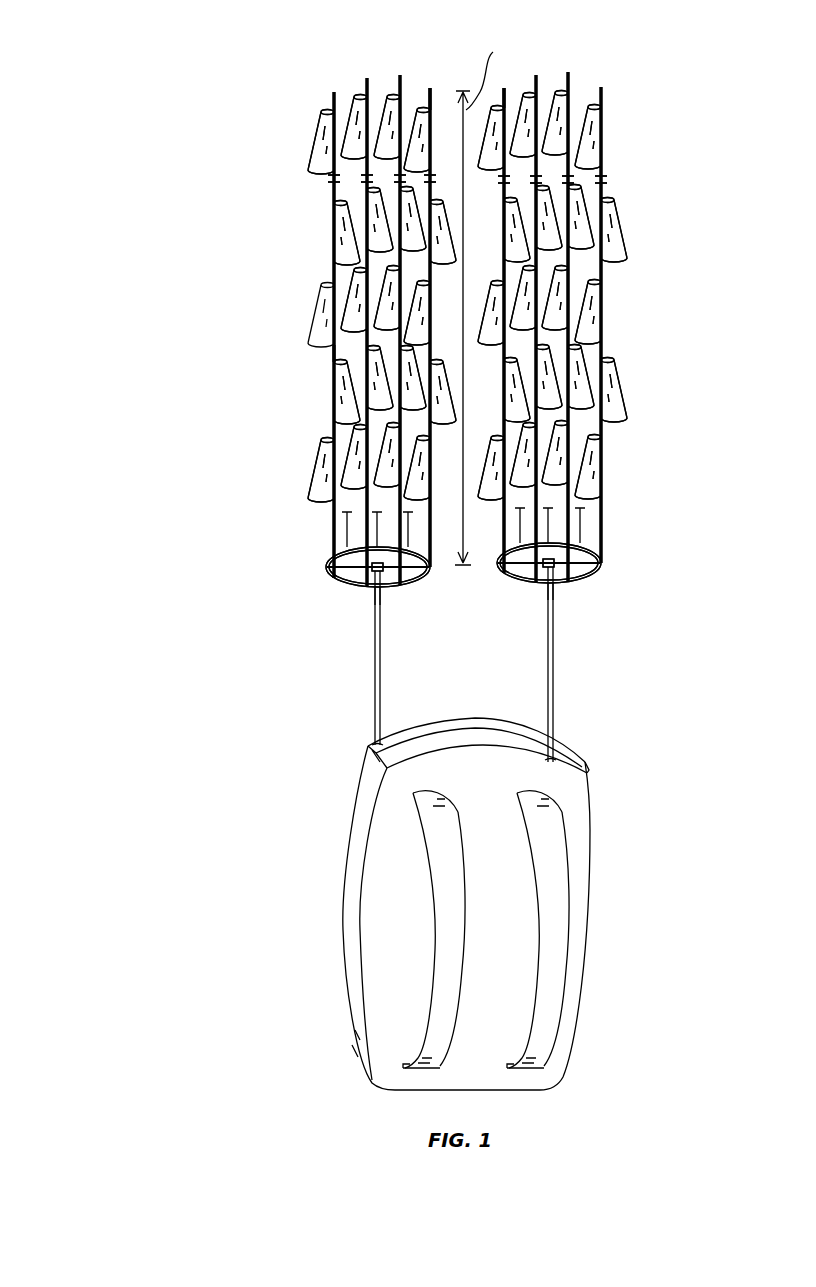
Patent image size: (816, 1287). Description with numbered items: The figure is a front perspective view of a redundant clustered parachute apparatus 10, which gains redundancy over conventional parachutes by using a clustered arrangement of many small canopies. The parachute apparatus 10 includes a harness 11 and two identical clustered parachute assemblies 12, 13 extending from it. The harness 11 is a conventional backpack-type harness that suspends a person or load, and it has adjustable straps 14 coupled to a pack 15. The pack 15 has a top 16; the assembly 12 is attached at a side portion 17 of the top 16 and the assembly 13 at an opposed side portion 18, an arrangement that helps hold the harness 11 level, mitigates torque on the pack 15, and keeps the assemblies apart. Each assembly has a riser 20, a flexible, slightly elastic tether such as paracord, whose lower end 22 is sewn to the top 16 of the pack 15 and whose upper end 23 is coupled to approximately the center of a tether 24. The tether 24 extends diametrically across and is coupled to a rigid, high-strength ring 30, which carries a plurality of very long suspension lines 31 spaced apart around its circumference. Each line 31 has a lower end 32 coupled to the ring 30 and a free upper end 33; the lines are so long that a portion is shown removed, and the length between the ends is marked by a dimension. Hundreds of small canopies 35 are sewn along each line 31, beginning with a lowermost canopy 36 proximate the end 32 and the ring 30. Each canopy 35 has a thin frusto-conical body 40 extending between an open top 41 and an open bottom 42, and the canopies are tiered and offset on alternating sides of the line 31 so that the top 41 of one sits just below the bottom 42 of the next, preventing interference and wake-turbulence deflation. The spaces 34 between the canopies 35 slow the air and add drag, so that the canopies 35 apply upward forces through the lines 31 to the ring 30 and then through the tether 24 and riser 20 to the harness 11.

The redundant clustered parachute apparatus 10 is at (159, 356).
The harness 11 is at (338, 874).
The clustered parachute assembly 12 is at (362, 45).
The clustered parachute assembly 13 is at (567, 37).
The adjustable straps 14 is at (448, 936).
The pack 15 is at (584, 822).
The top 16 is at (470, 728).
The side portion 17 is at (372, 765).
The opposed side portion 18 is at (580, 771).
The riser 20 is at (382, 680).
The lower end 22 is at (383, 741).
The upper end 23 is at (388, 574).
The tether 24 is at (416, 576).
The ring 30 is at (385, 596).
The suspension lines 31 is at (345, 97).
The lower end 32 is at (428, 563).
The upper end 33 is at (430, 88).
The spaces 34 is at (343, 348).
The canopies 35 is at (314, 142).
The lowermost canopy 36 is at (313, 472).
The frusto-conical body 40 is at (316, 302).
The open top 41 is at (322, 283).
The open bottom 42 is at (309, 341).